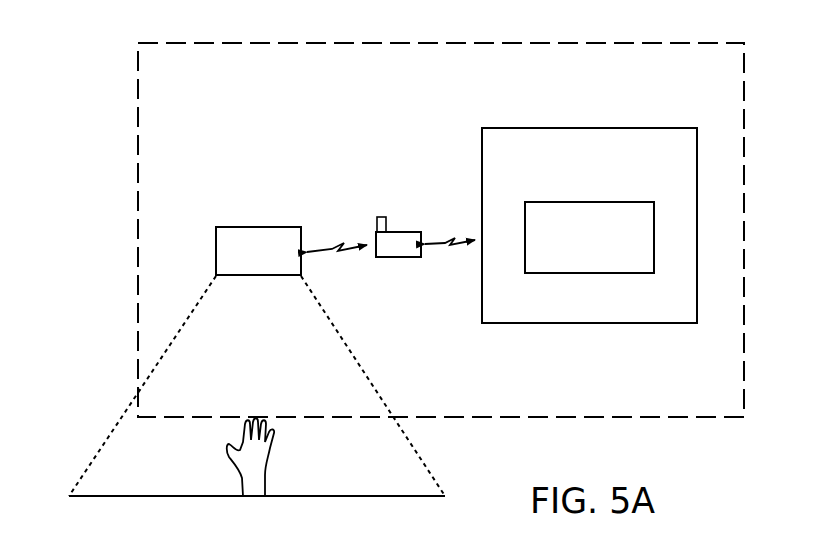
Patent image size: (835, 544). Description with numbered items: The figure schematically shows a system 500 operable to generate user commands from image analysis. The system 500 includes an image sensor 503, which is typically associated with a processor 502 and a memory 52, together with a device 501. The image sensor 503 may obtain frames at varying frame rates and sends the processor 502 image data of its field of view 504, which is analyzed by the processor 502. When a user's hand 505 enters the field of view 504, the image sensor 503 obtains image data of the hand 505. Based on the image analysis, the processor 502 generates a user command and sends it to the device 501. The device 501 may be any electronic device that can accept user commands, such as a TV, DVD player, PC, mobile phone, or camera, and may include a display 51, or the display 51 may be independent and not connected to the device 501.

The system 500 is at (118, 66).
The device 501 is at (593, 324).
The display 51 is at (588, 202).
The processor 502 is at (393, 232).
The memory 52 is at (377, 221).
The image sensor 503 is at (255, 227).
The field of view 504 is at (100, 465).
The user's hand 505 is at (272, 448).